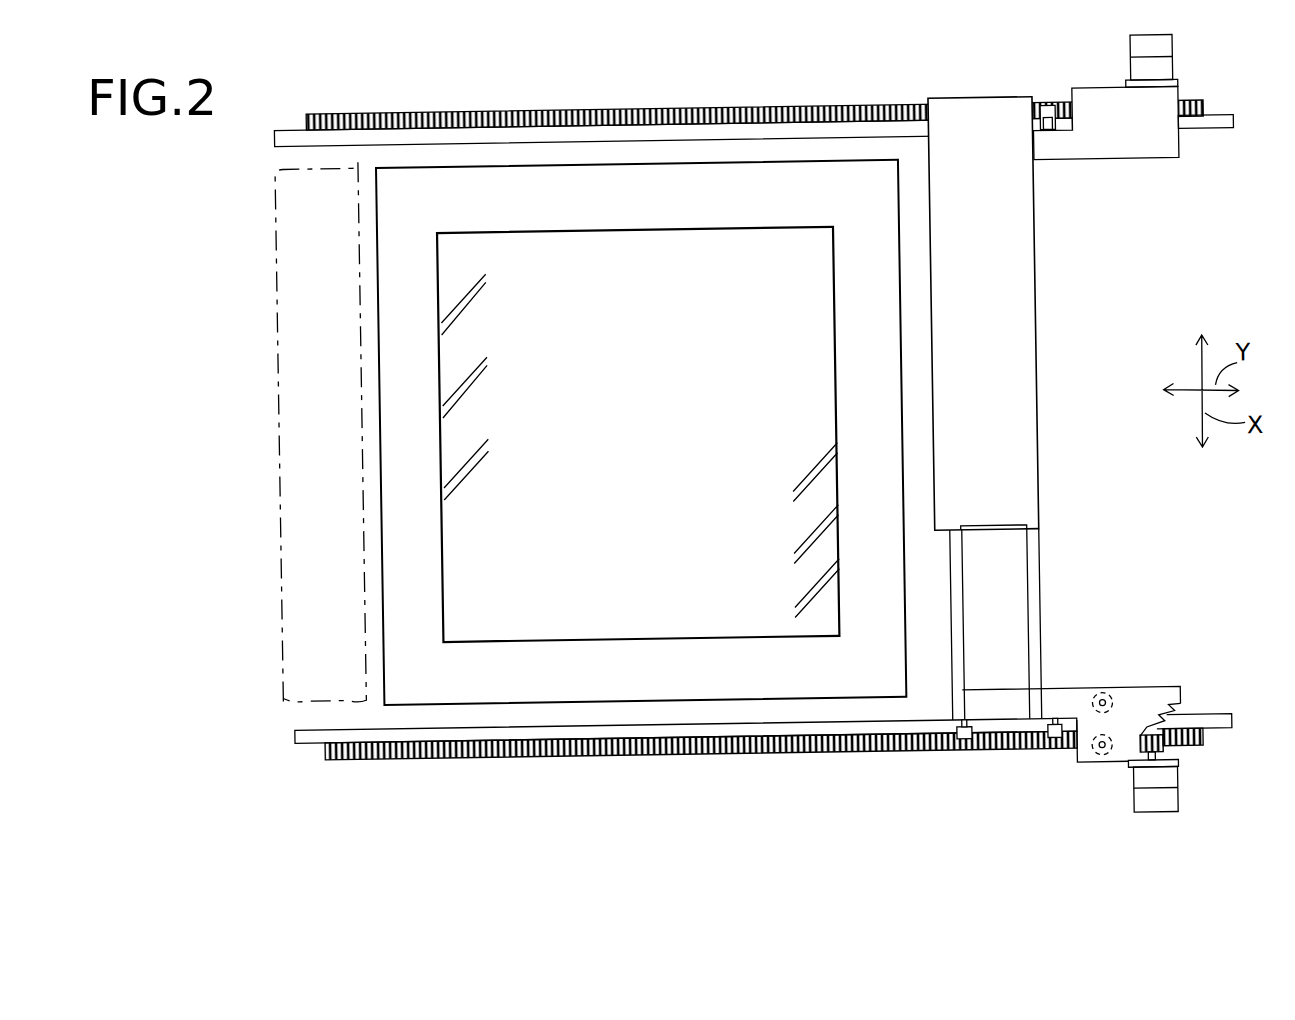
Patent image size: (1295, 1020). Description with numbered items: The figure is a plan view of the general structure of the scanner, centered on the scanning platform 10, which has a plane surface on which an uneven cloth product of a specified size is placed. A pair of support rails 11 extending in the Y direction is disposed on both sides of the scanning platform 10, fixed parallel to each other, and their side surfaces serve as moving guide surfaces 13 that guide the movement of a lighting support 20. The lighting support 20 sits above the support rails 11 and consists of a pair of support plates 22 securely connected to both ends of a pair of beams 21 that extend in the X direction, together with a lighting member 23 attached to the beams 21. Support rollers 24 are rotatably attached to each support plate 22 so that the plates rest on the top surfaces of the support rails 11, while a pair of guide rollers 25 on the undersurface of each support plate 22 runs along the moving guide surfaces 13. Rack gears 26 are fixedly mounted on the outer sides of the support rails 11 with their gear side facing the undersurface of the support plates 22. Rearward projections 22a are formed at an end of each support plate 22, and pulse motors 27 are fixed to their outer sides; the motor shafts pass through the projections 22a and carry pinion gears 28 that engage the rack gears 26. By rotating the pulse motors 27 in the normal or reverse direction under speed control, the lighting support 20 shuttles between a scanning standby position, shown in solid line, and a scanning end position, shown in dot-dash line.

The scanning platform 10 is at (595, 692).
The support rails 11 is at (289, 127).
The moving guide surfaces 13 is at (1221, 143).
The lighting support 20 is at (274, 442).
The beams 21 is at (1026, 572).
The support plates 22 is at (1115, 164).
The rearward projections 22a is at (1176, 775).
The lighting member 23 is at (1022, 372).
The support rollers 24 is at (1049, 117).
The guide rollers 25 is at (1085, 711).
The rack gears 26 is at (819, 119).
The pulse motors 27 is at (1170, 80).
The pinion gears 28 is at (1156, 747).